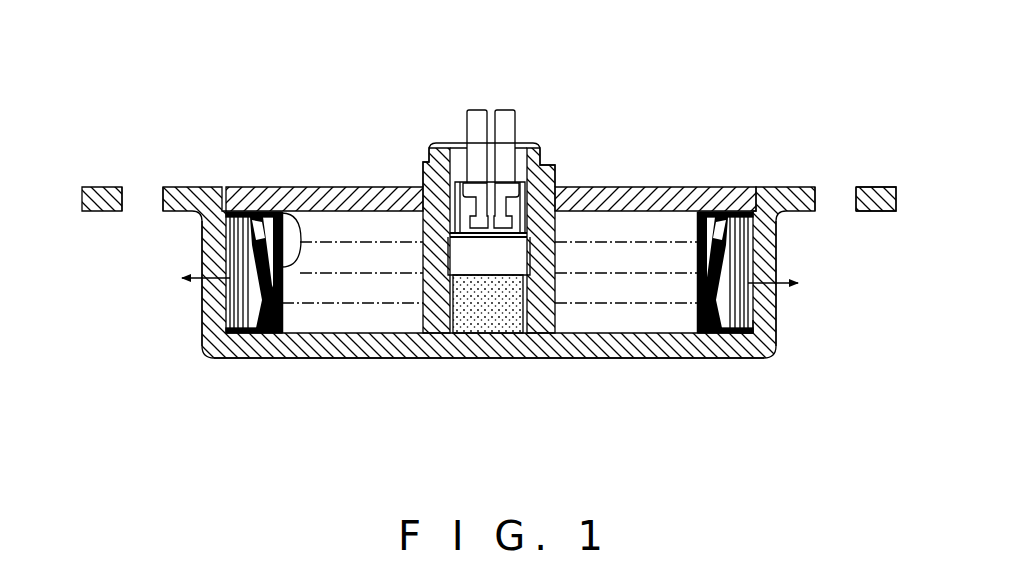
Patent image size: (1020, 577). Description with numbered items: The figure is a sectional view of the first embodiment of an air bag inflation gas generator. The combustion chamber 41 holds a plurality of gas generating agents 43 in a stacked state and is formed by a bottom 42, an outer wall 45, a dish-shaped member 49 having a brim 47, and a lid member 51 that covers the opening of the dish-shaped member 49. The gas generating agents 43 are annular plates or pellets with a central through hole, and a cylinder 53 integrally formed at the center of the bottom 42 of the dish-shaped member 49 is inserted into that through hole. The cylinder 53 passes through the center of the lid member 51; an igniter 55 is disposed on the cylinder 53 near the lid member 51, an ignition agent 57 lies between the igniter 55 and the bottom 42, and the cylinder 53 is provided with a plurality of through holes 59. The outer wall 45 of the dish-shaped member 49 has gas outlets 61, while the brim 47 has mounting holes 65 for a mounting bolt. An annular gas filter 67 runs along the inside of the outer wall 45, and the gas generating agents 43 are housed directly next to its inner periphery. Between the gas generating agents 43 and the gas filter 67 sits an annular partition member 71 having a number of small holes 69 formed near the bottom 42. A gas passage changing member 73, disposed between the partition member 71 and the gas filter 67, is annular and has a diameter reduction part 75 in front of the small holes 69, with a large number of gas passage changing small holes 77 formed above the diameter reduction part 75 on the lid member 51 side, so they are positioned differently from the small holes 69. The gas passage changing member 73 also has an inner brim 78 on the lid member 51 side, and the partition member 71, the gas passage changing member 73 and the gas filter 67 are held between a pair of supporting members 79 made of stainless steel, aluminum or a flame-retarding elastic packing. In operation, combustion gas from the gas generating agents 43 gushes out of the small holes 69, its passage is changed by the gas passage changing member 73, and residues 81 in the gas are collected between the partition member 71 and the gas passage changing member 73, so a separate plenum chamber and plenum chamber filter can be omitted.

The combustion chamber 41 is at (306, 218).
The bottom 42 is at (605, 358).
The gas generating agents 43 is at (593, 230).
The outer wall 45 is at (763, 322).
The brim 47 is at (871, 188).
The dish-shaped member 49 is at (572, 359).
The lid member 51 is at (656, 195).
The cylinder 53 is at (423, 250).
The igniter 55 is at (521, 165).
The ignition agent 57 is at (478, 313).
The through holes 59 is at (441, 310).
The gas outlets 61 is at (213, 255).
The mounting holes 65 is at (162, 188).
The gas filter 67 is at (243, 291).
The small holes 69 is at (283, 297).
The partition member 71 is at (276, 188).
The gas passage changing member 73 is at (242, 335).
The diameter reduction part 75 is at (722, 306).
The gas passage changing small holes 77 is at (245, 304).
The inner brim 78 is at (712, 220).
The supporting members 79 is at (744, 212).
The residues 81 is at (718, 222).